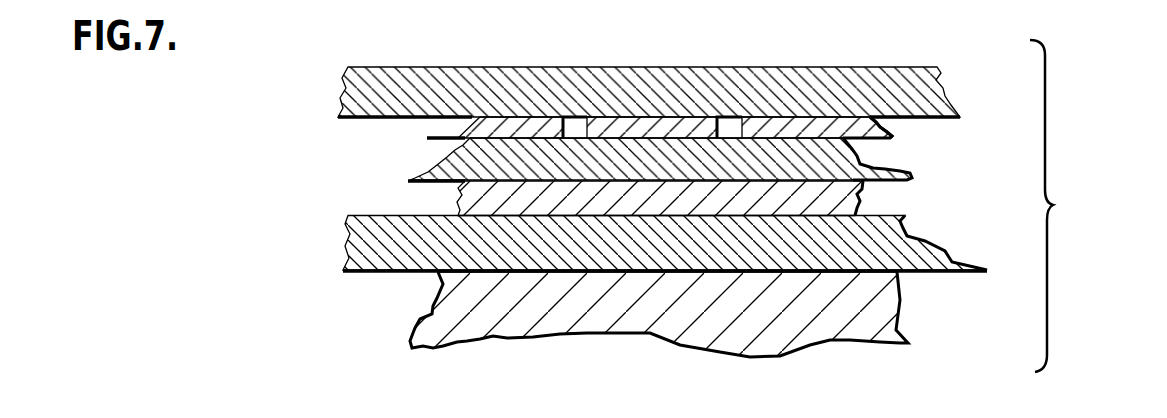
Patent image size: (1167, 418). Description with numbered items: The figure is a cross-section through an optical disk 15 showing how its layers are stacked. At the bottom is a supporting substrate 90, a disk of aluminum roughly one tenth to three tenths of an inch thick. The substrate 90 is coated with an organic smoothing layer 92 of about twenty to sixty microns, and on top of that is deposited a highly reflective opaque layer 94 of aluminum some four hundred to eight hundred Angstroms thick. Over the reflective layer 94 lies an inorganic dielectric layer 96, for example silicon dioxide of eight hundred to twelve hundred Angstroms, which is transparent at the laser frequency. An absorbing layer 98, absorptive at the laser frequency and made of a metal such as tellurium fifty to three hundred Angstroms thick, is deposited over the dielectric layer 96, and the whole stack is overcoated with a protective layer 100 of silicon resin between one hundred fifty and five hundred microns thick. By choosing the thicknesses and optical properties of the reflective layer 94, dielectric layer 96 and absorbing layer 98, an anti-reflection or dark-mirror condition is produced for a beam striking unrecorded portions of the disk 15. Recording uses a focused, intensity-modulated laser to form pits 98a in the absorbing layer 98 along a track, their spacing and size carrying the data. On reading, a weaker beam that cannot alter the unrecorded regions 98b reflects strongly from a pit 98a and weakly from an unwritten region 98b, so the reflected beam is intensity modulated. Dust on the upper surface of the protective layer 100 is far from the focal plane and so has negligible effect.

The protective layer 100 is at (436, 108).
The absorbing layer 98 is at (470, 121).
The pits 98a is at (575, 117).
The unrecorded regions 98b is at (917, 118).
The inorganic dielectric layer 96 is at (525, 176).
The reflective opaque layer 94 is at (870, 194).
The organic smoothing layer 92 is at (498, 263).
The supporting substrate 90 is at (682, 313).
The disk 15 is at (1086, 206).